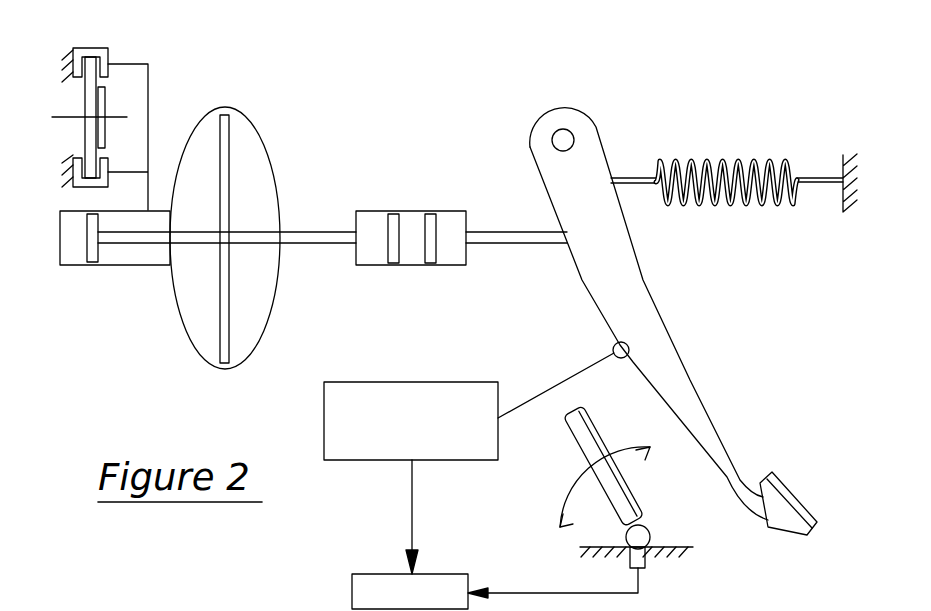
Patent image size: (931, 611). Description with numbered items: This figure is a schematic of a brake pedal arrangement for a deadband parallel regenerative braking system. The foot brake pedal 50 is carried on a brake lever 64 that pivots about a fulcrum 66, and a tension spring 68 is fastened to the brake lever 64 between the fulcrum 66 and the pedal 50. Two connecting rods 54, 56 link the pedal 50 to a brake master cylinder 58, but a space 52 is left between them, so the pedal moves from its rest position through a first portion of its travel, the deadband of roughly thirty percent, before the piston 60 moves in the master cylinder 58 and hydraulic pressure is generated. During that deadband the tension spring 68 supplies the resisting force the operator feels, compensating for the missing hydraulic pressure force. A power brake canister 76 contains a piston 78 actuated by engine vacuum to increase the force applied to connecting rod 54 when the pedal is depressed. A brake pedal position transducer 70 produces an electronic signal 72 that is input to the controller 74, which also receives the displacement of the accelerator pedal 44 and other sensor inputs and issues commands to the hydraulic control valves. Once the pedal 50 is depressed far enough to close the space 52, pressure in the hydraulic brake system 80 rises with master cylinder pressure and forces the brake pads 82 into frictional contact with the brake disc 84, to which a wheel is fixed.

The accelerator pedal 44 is at (633, 489).
The foot brake pedal 50 is at (800, 491).
The space 52 is at (410, 232).
The connecting rod 54 is at (307, 245).
The connecting rod 56 is at (497, 245).
The brake master cylinder 58 is at (113, 267).
The piston 60 is at (87, 238).
The brake lever 64 is at (687, 368).
The fulcrum 66 is at (562, 140).
The tension spring 68 is at (712, 158).
The brake pedal position transducer 70 is at (415, 382).
The electronic signal 72 is at (410, 513).
The controller 74 is at (352, 597).
The power brake canister 76 is at (278, 160).
The piston 78 is at (220, 143).
The hydraulic brake system 80 is at (148, 117).
The brake pads 82 is at (86, 49).
The brake disc 84 is at (90, 113).